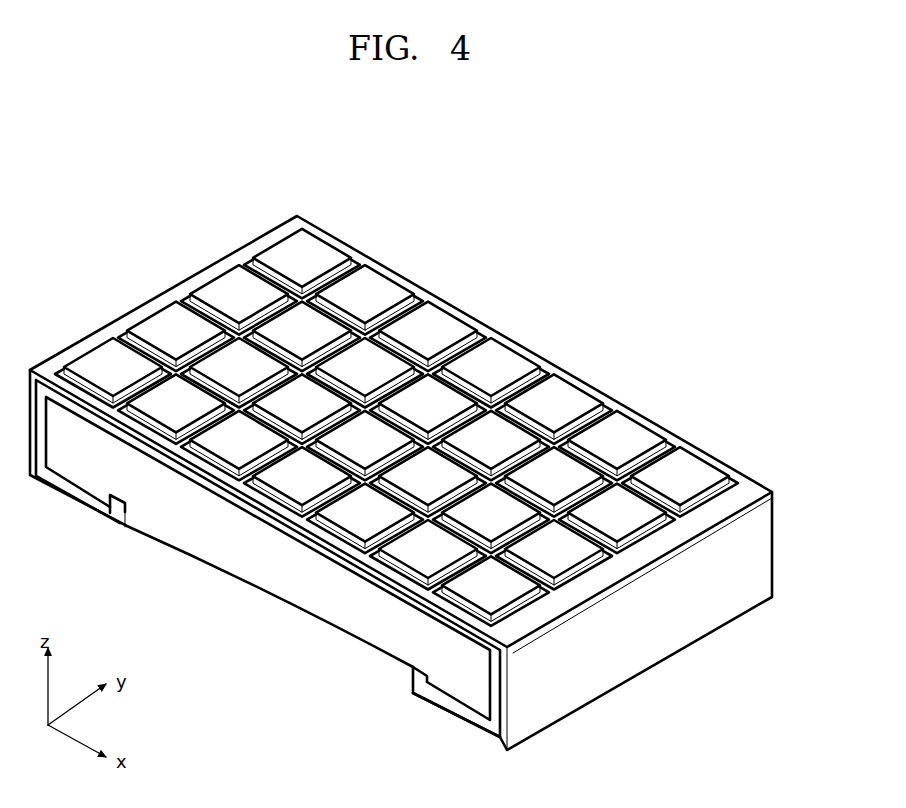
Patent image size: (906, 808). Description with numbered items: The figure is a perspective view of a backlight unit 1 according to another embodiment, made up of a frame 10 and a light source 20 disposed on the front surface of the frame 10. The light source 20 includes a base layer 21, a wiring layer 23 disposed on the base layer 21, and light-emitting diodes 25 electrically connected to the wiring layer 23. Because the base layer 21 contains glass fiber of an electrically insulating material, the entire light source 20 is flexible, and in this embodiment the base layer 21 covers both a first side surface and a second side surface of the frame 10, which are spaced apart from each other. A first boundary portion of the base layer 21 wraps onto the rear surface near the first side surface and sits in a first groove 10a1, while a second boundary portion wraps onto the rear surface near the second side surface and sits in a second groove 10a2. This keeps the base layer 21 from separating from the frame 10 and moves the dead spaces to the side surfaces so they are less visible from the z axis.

The backlight unit 1 is at (172, 200).
The frame 10 is at (277, 585).
The first groove 10a1 is at (406, 684).
The second groove 10a2 is at (135, 533).
The light source 20 is at (791, 405).
The base layer 21 is at (494, 690).
The wiring layer 23 is at (676, 445).
The light-emitting diodes 25 is at (618, 430).